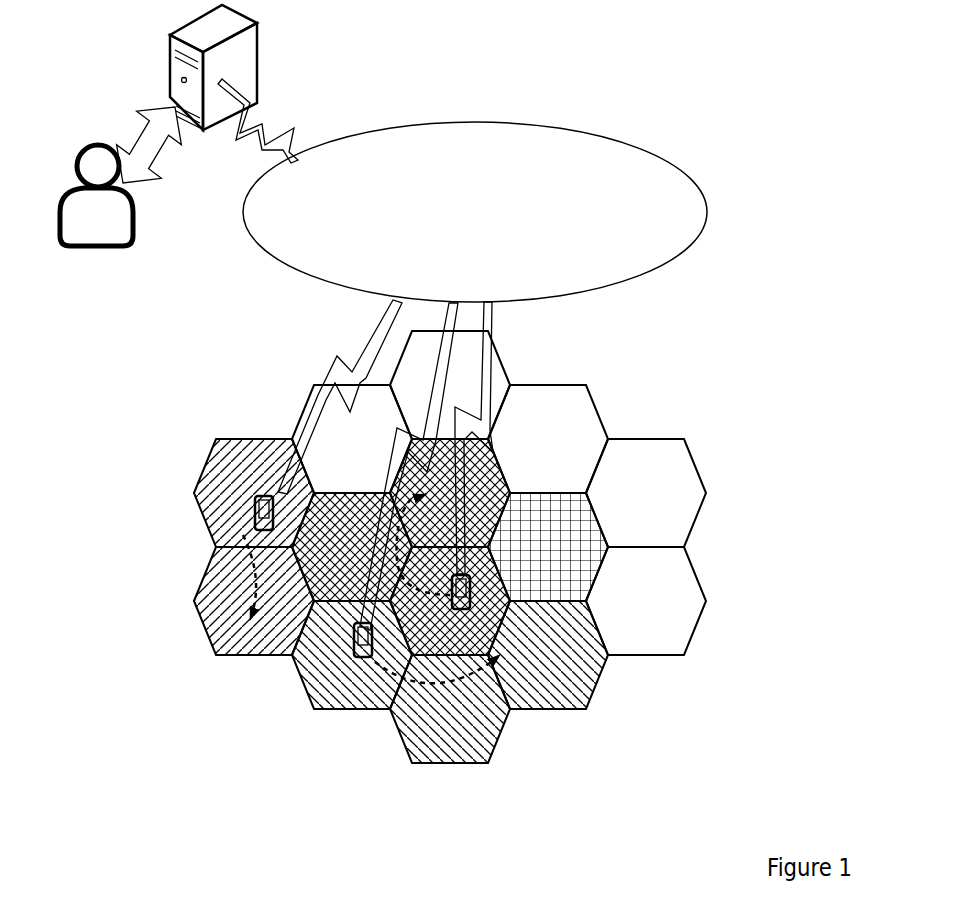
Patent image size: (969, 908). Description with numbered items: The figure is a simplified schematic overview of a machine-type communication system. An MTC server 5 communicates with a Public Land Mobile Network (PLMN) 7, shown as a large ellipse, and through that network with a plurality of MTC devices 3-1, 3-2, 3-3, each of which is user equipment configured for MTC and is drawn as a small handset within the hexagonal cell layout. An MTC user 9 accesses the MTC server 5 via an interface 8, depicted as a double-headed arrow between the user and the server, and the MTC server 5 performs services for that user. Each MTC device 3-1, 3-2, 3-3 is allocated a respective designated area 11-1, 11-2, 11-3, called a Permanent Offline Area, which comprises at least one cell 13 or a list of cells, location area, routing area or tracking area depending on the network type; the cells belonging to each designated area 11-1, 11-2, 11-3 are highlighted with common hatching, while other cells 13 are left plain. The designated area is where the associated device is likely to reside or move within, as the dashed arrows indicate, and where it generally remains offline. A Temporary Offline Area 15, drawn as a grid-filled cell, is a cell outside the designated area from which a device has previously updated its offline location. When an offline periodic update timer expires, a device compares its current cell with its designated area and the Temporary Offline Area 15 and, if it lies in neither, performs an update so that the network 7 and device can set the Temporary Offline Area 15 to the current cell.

The MTC server 5 is at (257, 66).
The Public Land Mobile Network (PLMN) 7 is at (466, 237).
The interface 8 is at (128, 143).
The MTC user 9 is at (133, 197).
The designated area 11-1 is at (355, 543).
The designated area 11-2 is at (428, 735).
The designated area 11-3 is at (216, 605).
The cell 13 is at (488, 332).
The Temporary Offline Area (TOA) 15 is at (575, 528).
The MTC device 3-1 is at (475, 602).
The MTC device 3-2 is at (365, 662).
The MTC device 3-3 is at (253, 527).